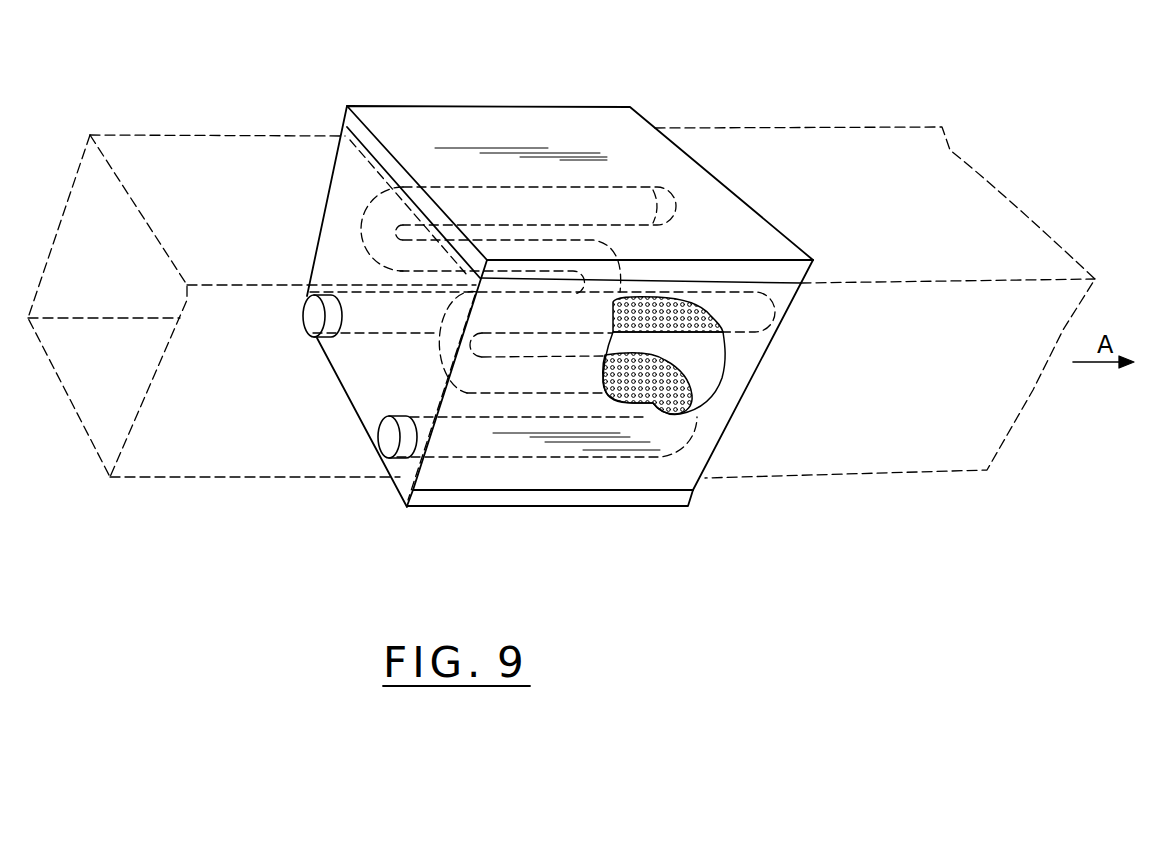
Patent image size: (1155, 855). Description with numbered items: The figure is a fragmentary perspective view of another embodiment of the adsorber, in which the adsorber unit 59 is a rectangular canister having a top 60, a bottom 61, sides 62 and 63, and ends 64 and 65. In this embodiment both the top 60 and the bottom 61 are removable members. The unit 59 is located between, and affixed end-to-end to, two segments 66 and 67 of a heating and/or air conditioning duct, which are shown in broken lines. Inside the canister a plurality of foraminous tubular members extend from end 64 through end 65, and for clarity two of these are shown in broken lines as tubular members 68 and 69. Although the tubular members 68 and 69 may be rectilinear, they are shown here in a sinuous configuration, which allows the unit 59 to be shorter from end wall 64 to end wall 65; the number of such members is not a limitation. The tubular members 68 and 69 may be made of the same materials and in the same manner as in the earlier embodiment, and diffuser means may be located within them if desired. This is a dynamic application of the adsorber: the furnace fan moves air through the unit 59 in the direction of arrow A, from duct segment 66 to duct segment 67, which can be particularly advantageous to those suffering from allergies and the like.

The adsorber unit 59 is at (543, 107).
The top 60 is at (422, 112).
The bottom 61 is at (452, 500).
The side 62 is at (640, 478).
The side 63 is at (342, 190).
The end 64 is at (378, 372).
The end 65 is at (720, 430).
The duct segment 66 is at (175, 135).
The duct segment 67 is at (830, 137).
The foraminous tubular member 68 is at (528, 457).
The foraminous tubular member 69 is at (367, 332).